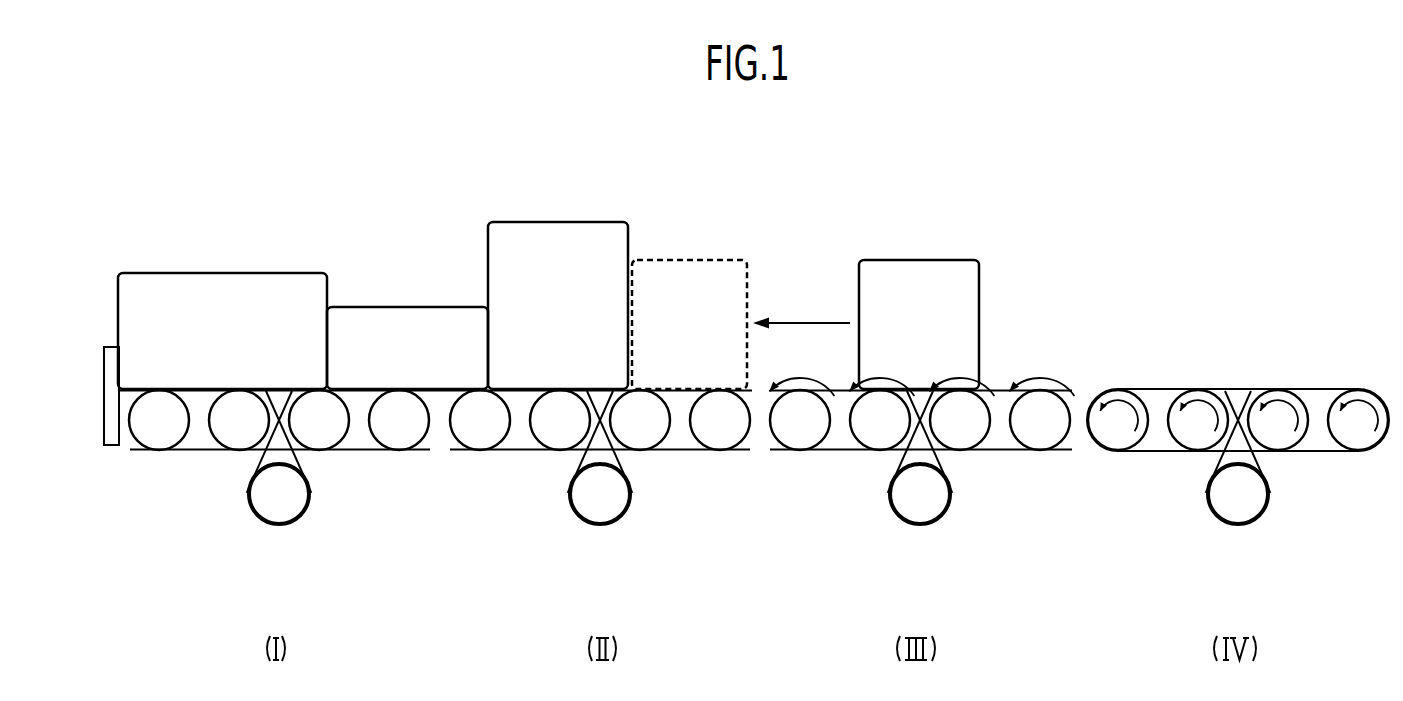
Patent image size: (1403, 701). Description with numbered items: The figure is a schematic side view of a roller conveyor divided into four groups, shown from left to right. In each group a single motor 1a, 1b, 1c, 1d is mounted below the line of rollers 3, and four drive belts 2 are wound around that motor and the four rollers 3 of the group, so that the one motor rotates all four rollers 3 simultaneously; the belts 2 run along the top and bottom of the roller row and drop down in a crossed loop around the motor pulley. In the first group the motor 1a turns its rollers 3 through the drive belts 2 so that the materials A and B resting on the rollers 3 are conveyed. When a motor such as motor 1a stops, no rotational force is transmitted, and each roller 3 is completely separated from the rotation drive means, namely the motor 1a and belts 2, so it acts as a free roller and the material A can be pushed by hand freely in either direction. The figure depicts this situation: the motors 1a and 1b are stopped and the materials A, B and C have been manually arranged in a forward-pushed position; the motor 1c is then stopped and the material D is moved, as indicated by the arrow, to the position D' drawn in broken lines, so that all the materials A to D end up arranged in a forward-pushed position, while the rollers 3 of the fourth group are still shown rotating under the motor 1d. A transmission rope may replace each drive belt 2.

The motor 1a is at (278, 518).
The motor 1b is at (598, 516).
The motor 1c is at (919, 516).
The motor 1d is at (1237, 513).
The drive belt 2 is at (325, 474).
The roller 3 is at (153, 442).
The material A is at (228, 282).
The material B is at (412, 315).
The material C is at (556, 230).
The position D' is at (689, 287).
The material D is at (919, 293).